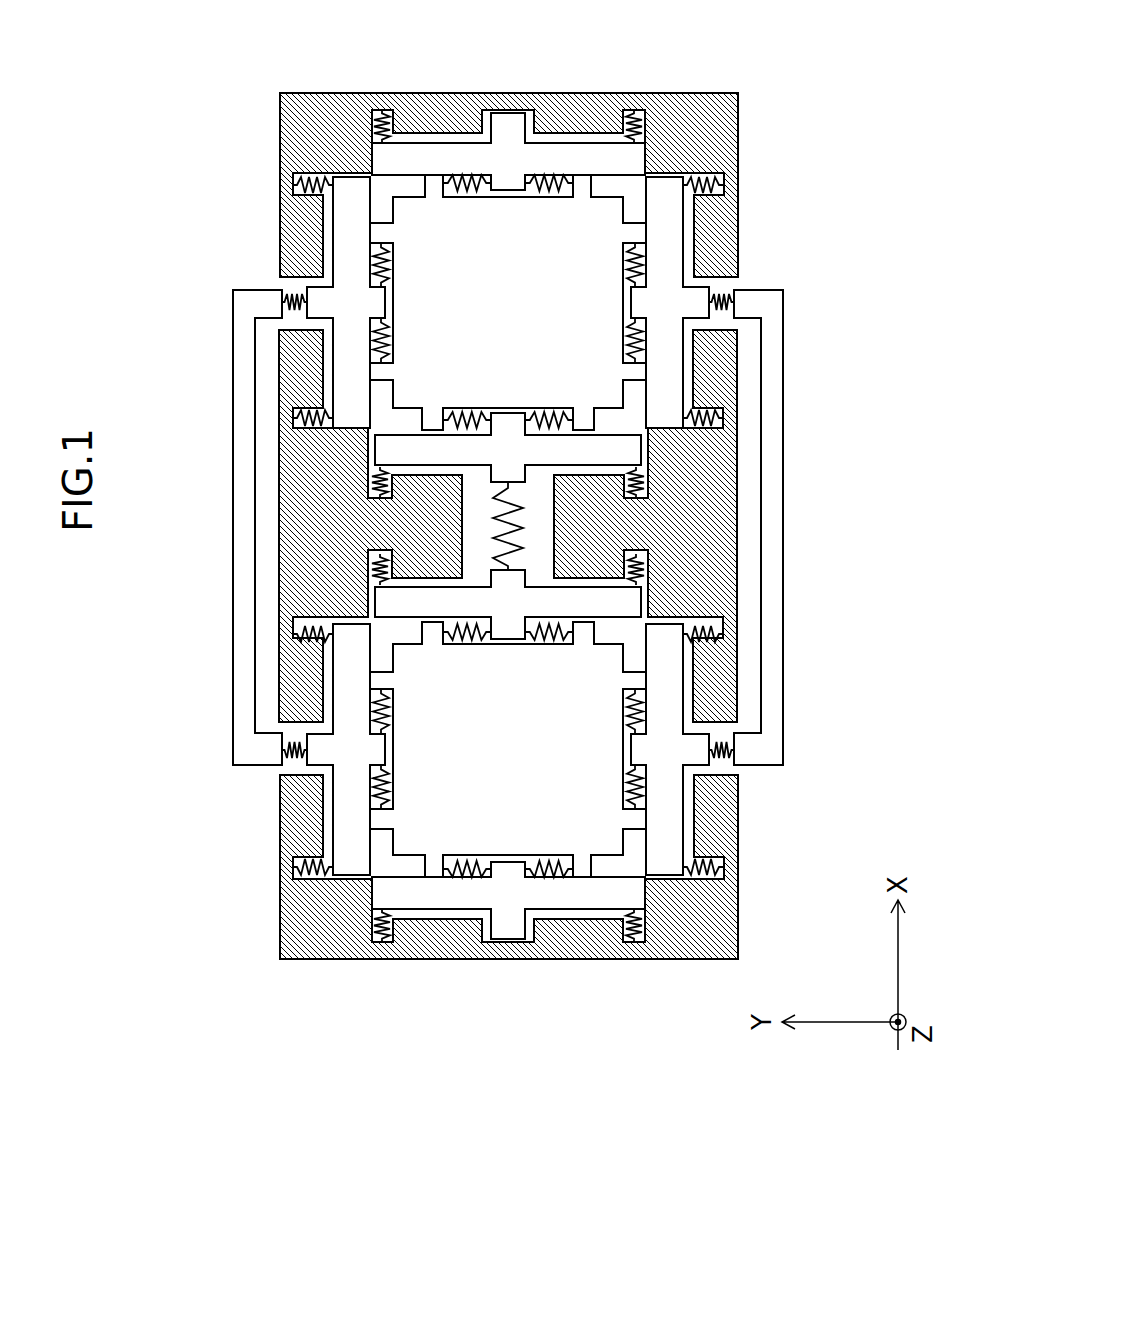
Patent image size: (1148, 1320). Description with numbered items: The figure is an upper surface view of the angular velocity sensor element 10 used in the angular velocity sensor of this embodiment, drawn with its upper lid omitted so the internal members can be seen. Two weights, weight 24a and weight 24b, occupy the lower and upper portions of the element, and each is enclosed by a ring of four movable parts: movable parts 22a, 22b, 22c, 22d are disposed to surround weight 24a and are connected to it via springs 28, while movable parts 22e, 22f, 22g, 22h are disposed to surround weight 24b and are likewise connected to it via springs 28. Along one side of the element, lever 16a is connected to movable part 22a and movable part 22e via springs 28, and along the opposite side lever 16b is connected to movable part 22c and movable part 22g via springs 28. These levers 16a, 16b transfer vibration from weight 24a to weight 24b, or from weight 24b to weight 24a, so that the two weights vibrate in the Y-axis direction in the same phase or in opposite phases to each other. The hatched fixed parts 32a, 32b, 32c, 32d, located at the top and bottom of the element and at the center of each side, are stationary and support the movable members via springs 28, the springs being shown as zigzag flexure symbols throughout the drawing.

The angular velocity sensor element 10 is at (247, 142).
The lever 16a is at (247, 607).
The lever 16b is at (775, 433).
The movable part 22a is at (345, 807).
The movable part 22b is at (395, 600).
The movable part 22c is at (665, 793).
The movable part 22d is at (568, 892).
The movable part 22e is at (345, 218).
The movable part 22f is at (603, 162).
The movable part 22g is at (670, 230).
The movable part 22h is at (395, 447).
The weight 24a is at (587, 820).
The weight 24b is at (448, 223).
The spring 28 is at (552, 178).
The fixed part 32a is at (702, 938).
The fixed part 32b is at (312, 493).
The fixed part 32c is at (702, 130).
The fixed part 32d is at (720, 475).